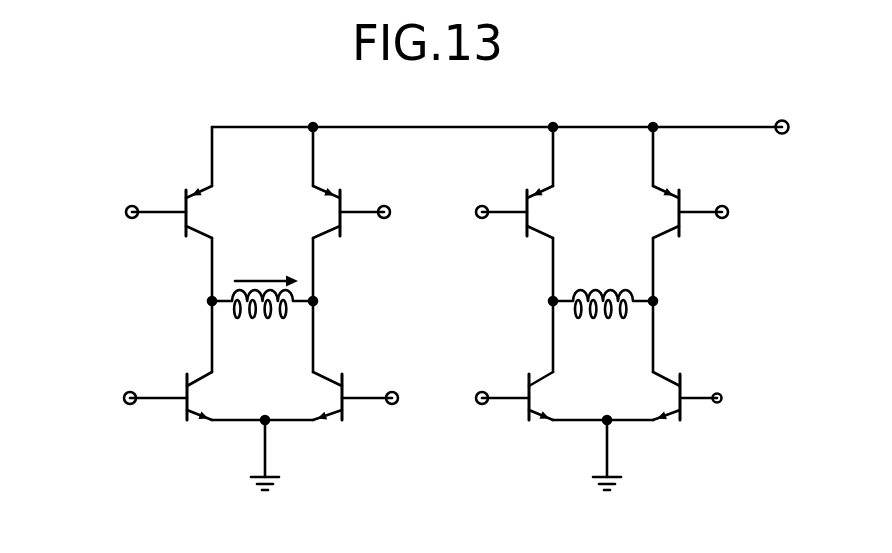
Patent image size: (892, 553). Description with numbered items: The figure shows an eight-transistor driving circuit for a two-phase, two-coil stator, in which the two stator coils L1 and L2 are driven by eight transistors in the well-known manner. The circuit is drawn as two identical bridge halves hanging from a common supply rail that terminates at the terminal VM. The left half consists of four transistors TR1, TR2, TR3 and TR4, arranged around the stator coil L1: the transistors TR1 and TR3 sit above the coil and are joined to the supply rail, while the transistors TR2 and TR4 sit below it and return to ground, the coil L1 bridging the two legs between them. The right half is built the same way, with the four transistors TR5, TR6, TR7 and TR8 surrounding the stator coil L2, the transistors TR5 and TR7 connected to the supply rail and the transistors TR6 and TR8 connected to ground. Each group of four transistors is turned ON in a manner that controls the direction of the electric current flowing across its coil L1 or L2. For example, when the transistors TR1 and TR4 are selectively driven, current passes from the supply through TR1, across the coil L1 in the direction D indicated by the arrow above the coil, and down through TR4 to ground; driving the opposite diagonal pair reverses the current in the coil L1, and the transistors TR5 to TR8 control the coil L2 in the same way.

The transistor TR1 is at (156, 214).
The transistor TR2 is at (188, 360).
The transistor TR3 is at (355, 214).
The transistor TR4 is at (336, 360).
The transistor TR5 is at (499, 214).
The transistor TR6 is at (524, 360).
The transistor TR7 is at (695, 214).
The transistor TR8 is at (677, 360).
The stator coil L1 is at (262, 324).
The stator coil L2 is at (603, 323).
The direction of current D is at (266, 260).
The motor supply voltage VM is at (809, 124).